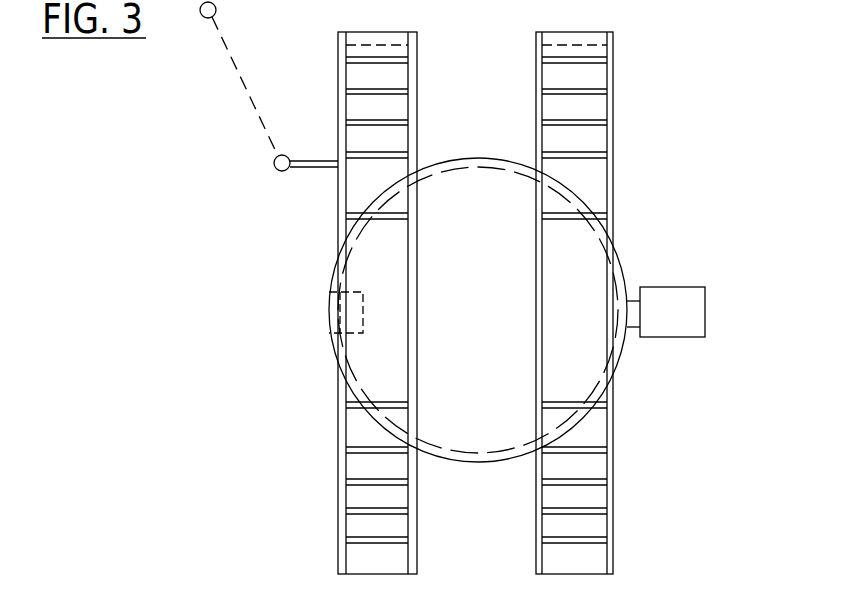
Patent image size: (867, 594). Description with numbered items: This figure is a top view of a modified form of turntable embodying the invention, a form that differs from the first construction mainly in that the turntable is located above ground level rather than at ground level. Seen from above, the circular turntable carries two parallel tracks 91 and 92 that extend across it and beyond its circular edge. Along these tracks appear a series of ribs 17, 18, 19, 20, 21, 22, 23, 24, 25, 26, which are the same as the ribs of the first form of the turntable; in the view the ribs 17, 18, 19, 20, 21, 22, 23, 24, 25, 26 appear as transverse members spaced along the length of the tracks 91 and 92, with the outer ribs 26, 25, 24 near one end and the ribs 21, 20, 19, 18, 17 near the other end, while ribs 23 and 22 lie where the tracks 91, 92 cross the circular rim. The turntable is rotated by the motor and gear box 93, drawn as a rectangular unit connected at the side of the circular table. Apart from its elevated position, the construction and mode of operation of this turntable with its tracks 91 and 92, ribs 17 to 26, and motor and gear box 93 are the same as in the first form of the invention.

The rib 17 is at (563, 542).
The rib 18 is at (557, 510).
The rib 19 is at (557, 480).
The rib 20 is at (573, 449).
The rib 21 is at (553, 402).
The rib 22 is at (557, 222).
The rib 23 is at (553, 158).
The rib 24 is at (557, 121).
The rib 25 is at (553, 90).
The rib 26 is at (553, 57).
The track 91 is at (414, 97).
The track 92 is at (613, 83).
The motor and gear box 93 is at (707, 262).